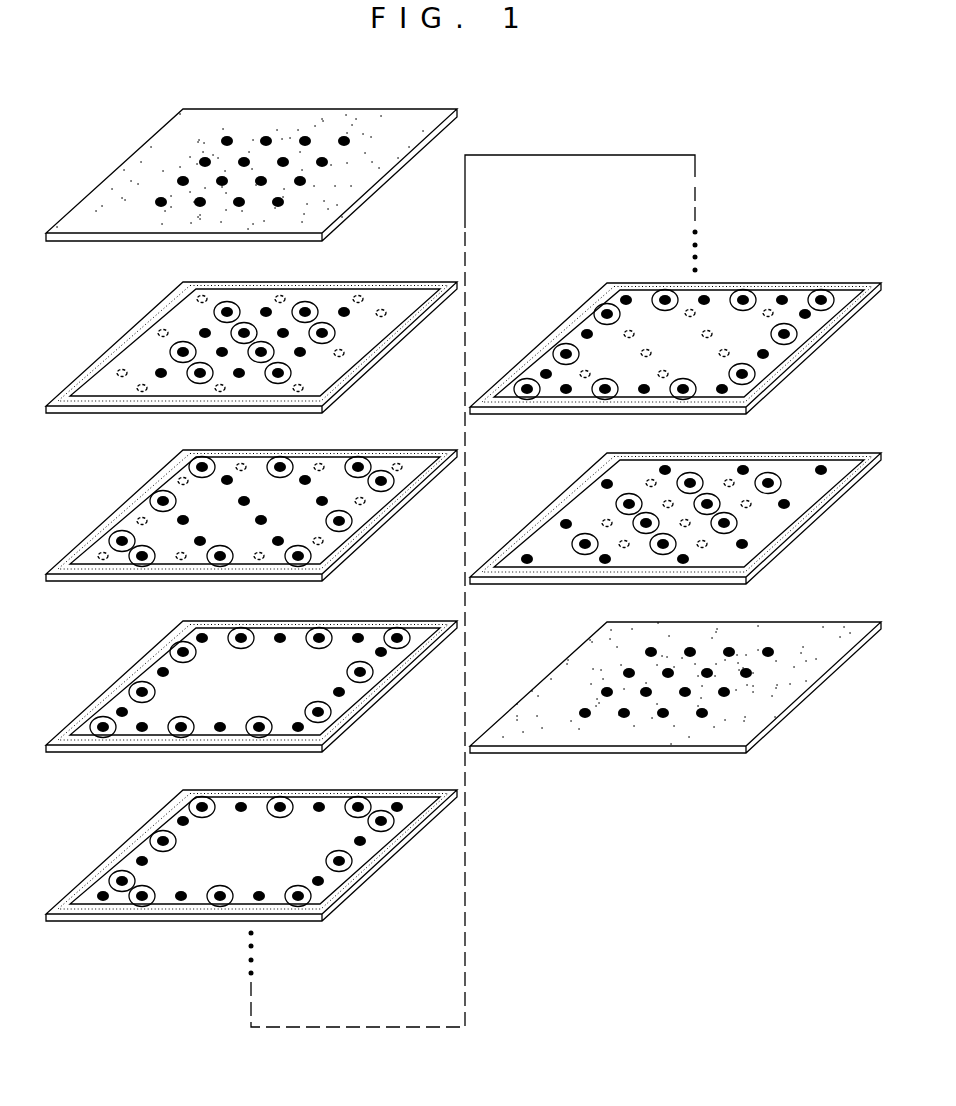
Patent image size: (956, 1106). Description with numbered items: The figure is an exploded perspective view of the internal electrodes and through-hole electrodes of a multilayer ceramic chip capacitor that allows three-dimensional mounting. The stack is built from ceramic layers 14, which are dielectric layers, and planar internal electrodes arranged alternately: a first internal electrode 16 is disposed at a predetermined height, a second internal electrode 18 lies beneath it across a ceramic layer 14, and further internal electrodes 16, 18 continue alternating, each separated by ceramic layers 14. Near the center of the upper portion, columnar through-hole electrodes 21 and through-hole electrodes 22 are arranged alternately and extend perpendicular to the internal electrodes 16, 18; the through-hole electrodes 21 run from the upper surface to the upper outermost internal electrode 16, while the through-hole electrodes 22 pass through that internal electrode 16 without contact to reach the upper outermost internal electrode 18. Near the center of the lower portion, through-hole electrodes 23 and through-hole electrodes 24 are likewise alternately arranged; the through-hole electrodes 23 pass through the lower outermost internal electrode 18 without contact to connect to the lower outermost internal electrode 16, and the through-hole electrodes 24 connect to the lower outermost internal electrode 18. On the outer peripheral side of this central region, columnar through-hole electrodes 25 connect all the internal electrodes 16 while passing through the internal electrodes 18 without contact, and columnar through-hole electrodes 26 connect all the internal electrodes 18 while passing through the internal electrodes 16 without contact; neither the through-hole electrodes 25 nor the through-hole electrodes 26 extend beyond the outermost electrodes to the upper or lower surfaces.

The ceramic layer 14 is at (402, 160).
The internal electrode 16 is at (334, 372).
The internal electrode 18 is at (334, 540).
The through-hole electrode 21 is at (205, 160).
The through-hole electrode 22 is at (304, 138).
The through-hole electrode 23 is at (585, 370).
The through-hole electrode 24 is at (746, 499).
The through-hole electrode 25 is at (341, 349).
The through-hole electrode 26 is at (178, 560).